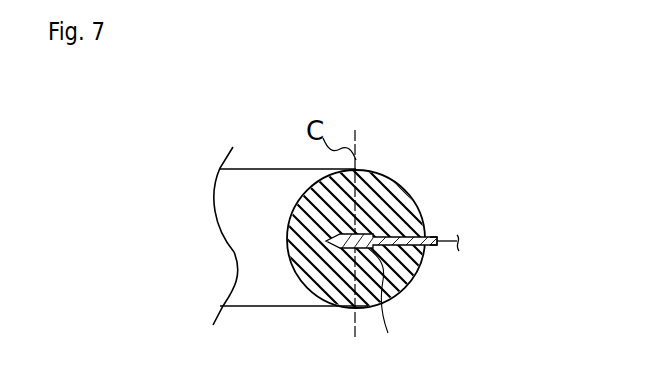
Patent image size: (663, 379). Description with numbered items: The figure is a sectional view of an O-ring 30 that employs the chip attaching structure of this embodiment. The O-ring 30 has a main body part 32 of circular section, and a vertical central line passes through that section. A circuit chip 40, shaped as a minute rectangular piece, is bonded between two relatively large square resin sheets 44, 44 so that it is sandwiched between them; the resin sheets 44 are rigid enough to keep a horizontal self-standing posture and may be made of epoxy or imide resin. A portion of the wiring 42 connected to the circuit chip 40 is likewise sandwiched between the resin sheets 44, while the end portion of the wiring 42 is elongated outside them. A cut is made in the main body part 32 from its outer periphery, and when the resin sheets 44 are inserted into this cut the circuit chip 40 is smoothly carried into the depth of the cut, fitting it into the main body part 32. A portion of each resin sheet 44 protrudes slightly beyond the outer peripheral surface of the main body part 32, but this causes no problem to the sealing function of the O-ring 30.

The O-ring 30 is at (296, 168).
The main body part 32 is at (402, 184).
The circuit chip 40 is at (393, 303).
The wiring 42 is at (457, 246).
The resin sheets 44 is at (435, 237).